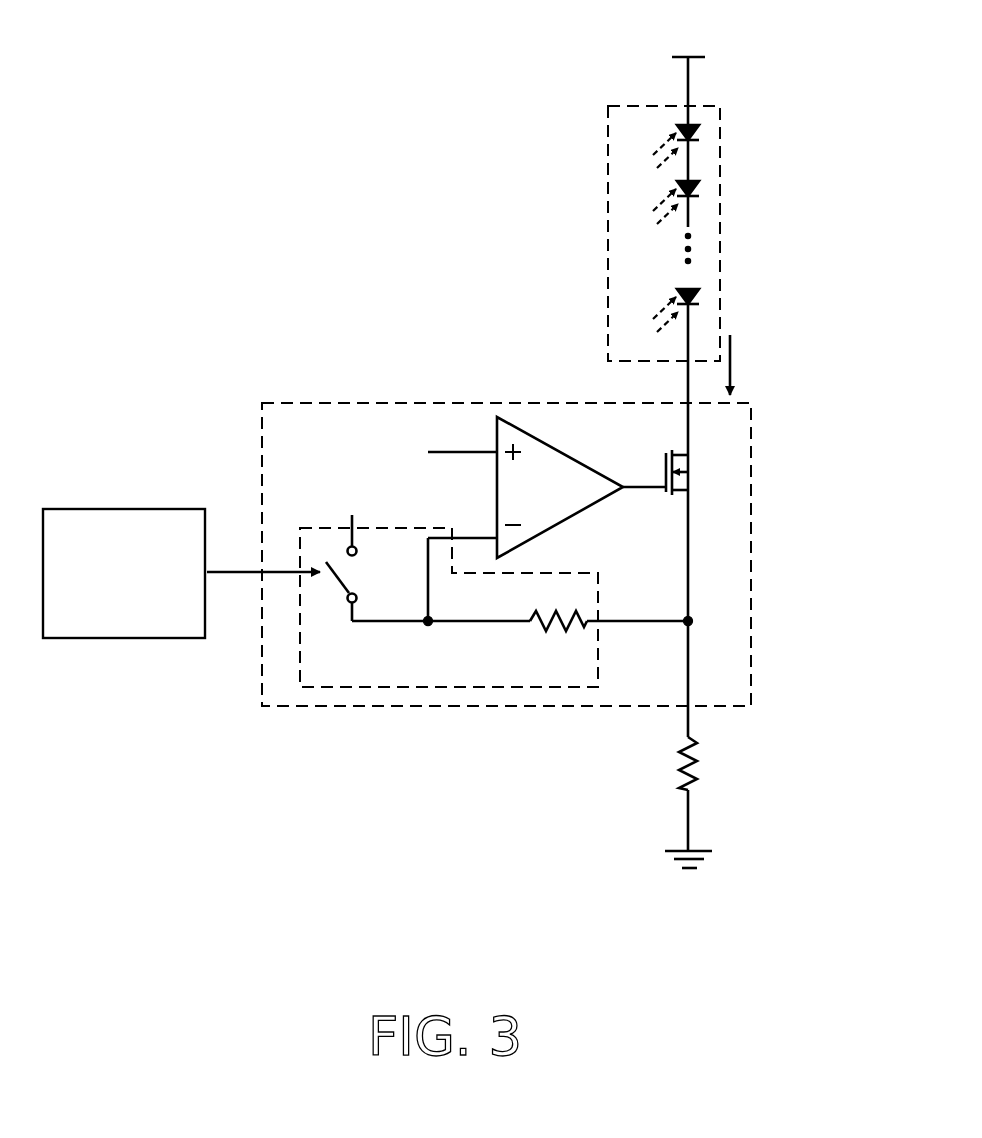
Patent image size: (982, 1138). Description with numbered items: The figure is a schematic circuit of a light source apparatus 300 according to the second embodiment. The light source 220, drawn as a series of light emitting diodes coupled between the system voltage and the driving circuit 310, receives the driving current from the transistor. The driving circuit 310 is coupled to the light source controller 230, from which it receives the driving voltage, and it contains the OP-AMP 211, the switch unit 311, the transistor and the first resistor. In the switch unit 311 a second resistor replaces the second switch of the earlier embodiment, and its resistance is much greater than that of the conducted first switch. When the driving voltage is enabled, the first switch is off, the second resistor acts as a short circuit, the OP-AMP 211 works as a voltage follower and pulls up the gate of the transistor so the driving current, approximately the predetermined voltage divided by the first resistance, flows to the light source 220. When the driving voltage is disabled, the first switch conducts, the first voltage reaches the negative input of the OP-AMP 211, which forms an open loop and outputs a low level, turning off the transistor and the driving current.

The light source apparatus 300 is at (453, 471).
The light source 220 is at (720, 255).
The driving circuit 310 is at (562, 607).
The switch unit 311 is at (500, 688).
The OP-AMP 211 is at (572, 455).
The light source controller 230 is at (148, 640).